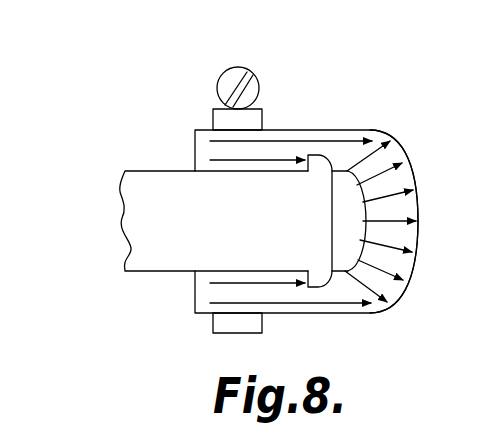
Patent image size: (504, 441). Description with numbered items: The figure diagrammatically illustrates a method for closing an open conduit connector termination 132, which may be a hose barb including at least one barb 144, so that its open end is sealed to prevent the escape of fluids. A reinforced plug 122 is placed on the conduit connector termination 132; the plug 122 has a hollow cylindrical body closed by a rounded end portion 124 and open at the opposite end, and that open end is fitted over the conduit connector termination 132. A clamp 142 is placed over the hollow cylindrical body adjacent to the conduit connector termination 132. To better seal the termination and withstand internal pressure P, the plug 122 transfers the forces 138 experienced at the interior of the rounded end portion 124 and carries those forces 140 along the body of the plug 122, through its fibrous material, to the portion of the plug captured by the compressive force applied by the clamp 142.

The reinforced plug 122 is at (417, 172).
The rounded end portion 124 is at (415, 270).
The conduit connector termination 132 is at (153, 272).
The forces 138 is at (398, 221).
The forces 140 is at (282, 140).
The clamp 142 is at (212, 115).
The barb 144 is at (322, 157).
The flow pattern P is at (348, 232).